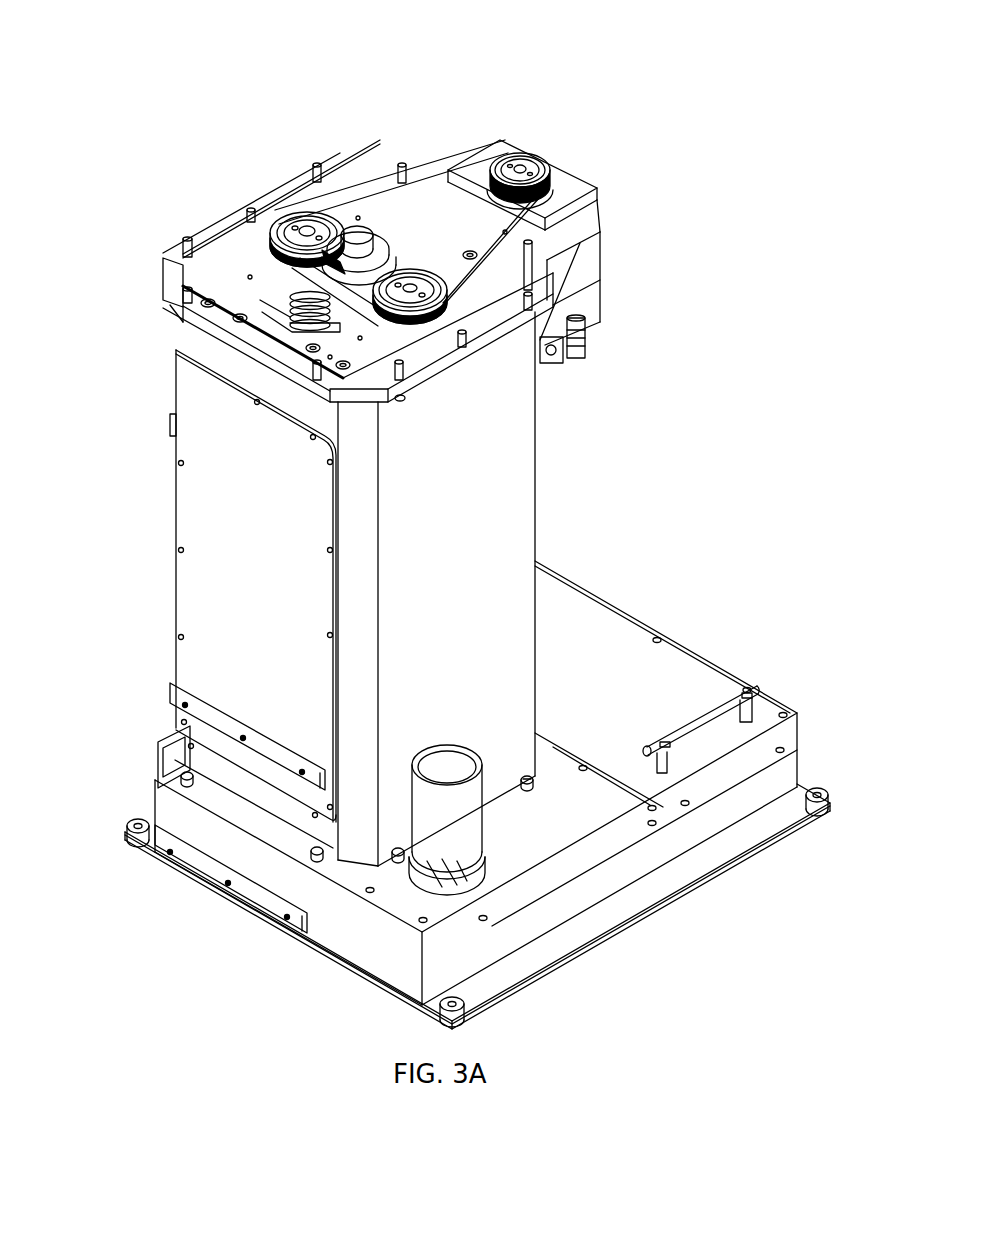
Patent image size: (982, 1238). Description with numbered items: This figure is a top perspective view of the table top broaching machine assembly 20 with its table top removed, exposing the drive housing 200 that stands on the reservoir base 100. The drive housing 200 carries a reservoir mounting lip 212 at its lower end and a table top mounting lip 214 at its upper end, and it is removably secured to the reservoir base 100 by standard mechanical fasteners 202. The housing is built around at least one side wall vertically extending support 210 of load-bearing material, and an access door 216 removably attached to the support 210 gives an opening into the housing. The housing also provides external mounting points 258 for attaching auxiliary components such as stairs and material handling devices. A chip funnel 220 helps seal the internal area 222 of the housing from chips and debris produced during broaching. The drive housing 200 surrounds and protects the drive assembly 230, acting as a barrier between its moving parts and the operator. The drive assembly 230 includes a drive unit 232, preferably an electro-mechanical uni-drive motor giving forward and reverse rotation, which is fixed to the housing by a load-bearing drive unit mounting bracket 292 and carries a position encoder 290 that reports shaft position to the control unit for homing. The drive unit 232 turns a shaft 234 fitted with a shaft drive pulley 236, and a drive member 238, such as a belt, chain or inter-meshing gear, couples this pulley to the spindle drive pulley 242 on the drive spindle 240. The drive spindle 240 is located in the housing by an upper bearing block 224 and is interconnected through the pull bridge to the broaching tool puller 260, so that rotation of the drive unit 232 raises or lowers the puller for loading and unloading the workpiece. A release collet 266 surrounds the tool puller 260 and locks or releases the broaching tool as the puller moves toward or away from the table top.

The table top broaching machine assembly 20 is at (668, 143).
The reservoir base 100 is at (748, 620).
The drive housing 200 is at (617, 498).
The mechanical fasteners 202 is at (528, 785).
The side wall vertically extending support 210 is at (490, 457).
The reservoir mounting lip 212 is at (360, 868).
The table top mounting lip 214 is at (172, 282).
The access door 216 is at (222, 483).
The chip funnel 220 is at (400, 230).
The internal area 222 is at (285, 318).
The upper bearing block 224 is at (353, 350).
The drive assembly 230 is at (423, 150).
The drive unit 232 is at (568, 293).
The shaft 234 is at (532, 167).
The shaft drive pulley 236 is at (527, 150).
The drive member 238 is at (455, 178).
The drive spindle 240 is at (303, 230).
The spindle drive pulley 242 is at (278, 308).
The external mounting points 258 is at (273, 750).
The broaching tool puller 260 is at (347, 230).
The release collet 266 is at (378, 230).
The position encoder 290 is at (557, 362).
The drive unit mounting bracket 292 is at (575, 248).